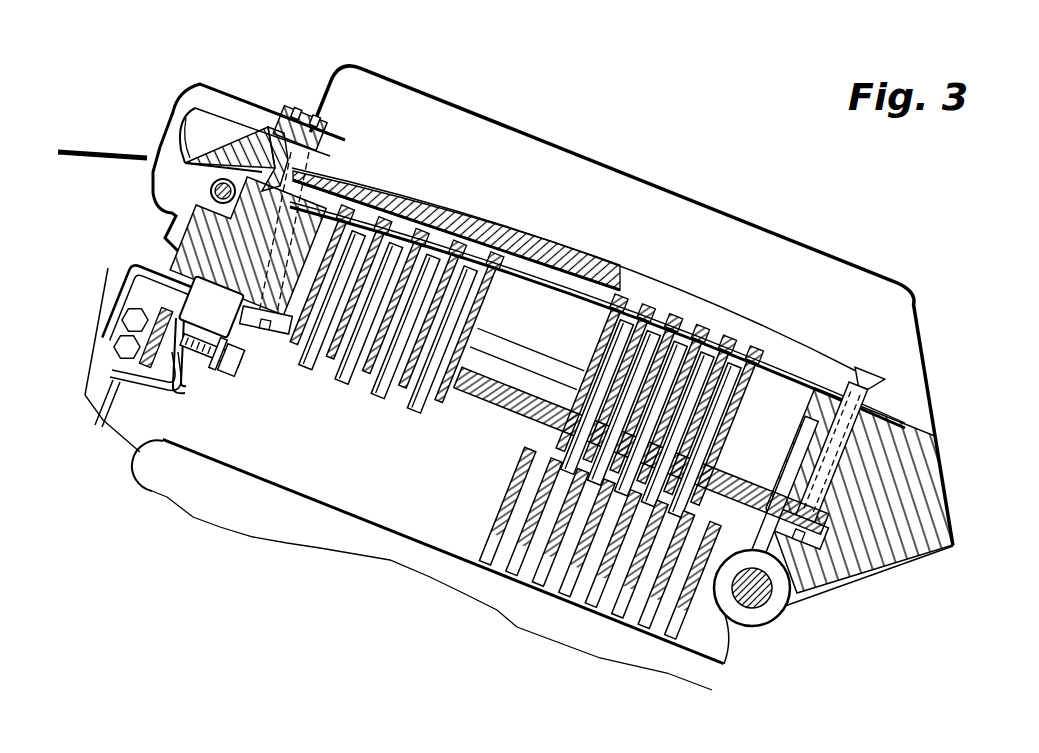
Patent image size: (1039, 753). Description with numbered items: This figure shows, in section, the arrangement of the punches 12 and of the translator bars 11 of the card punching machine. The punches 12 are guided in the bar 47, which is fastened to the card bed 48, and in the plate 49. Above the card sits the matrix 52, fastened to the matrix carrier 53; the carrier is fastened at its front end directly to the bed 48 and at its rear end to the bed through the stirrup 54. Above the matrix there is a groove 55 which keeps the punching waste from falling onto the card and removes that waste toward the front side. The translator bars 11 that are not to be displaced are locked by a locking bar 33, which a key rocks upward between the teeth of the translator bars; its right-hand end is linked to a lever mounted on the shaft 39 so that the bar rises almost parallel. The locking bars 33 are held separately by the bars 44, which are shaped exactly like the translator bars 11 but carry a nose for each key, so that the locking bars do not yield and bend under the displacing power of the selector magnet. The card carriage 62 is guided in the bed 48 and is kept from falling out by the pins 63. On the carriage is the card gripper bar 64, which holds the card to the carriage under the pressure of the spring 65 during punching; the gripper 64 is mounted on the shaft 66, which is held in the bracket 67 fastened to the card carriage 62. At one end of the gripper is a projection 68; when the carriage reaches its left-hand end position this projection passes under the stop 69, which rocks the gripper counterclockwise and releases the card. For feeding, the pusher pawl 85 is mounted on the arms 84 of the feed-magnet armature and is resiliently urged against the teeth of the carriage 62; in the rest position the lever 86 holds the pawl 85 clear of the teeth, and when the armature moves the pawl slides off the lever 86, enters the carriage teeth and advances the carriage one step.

The translator bars 11 is at (644, 626).
The punches 12 is at (439, 401).
The locking bar 33 is at (392, 551).
The shaft 39 is at (770, 600).
The bars 44 is at (693, 607).
The bar 47 is at (495, 395).
The card bed 48 is at (887, 480).
The plate 49 is at (602, 267).
The matrix 52 is at (553, 250).
The matrix carrier 53 is at (518, 240).
The stirrup 54 is at (252, 113).
The groove 55 is at (807, 278).
The card carriage 62 is at (247, 237).
The pins 63 is at (305, 123).
The card gripper bar 64 is at (237, 152).
The spring 65 is at (185, 163).
The shaft 66 is at (211, 191).
The bracket 67 is at (270, 137).
The projection 68 is at (214, 130).
The stop 69 is at (197, 137).
The arms 84 is at (100, 430).
The pusher pawl 85 is at (205, 305).
The lever 86 is at (93, 350).